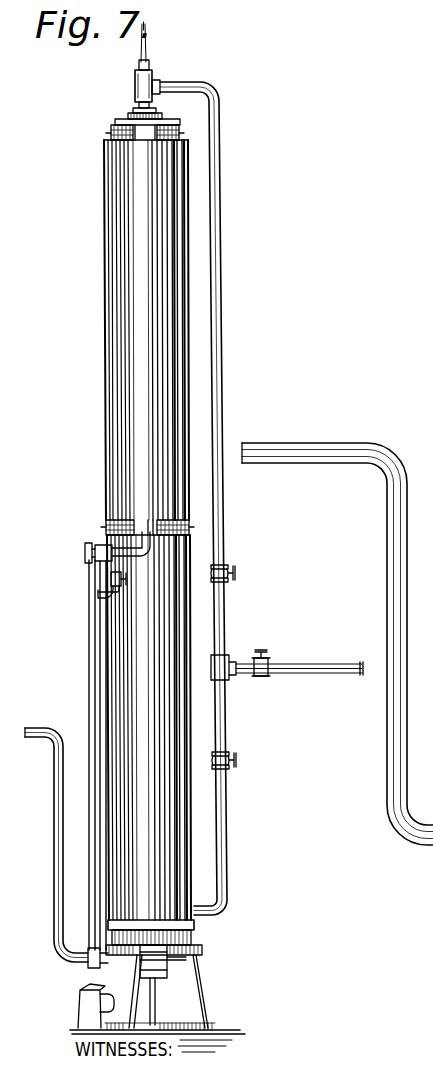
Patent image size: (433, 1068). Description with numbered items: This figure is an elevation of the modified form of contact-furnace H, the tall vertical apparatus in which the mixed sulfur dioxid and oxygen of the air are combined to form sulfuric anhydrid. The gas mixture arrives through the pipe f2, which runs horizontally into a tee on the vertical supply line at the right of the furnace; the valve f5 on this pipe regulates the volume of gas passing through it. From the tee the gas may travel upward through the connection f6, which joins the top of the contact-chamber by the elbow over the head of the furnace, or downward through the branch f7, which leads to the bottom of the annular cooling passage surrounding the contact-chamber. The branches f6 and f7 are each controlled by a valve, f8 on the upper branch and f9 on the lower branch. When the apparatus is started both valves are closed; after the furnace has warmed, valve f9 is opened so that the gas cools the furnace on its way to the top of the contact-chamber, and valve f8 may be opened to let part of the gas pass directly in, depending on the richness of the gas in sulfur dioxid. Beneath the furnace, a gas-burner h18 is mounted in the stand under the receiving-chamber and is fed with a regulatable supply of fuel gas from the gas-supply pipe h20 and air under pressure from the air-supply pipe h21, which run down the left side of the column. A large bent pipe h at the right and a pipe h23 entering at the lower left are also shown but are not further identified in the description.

The contact-furnace H is at (151, 488).
The pipe f2 is at (325, 663).
The valve f5 is at (263, 655).
The connection f6 is at (225, 611).
The branch f7 is at (227, 826).
The valve f8 is at (233, 572).
The valve f9 is at (236, 760).
The pipe h is at (395, 735).
The gas-burner h18 is at (160, 975).
The gas-supply pipe h20 is at (92, 683).
The air-supply pipe h21 is at (103, 713).
The pipe h23 is at (88, 968).